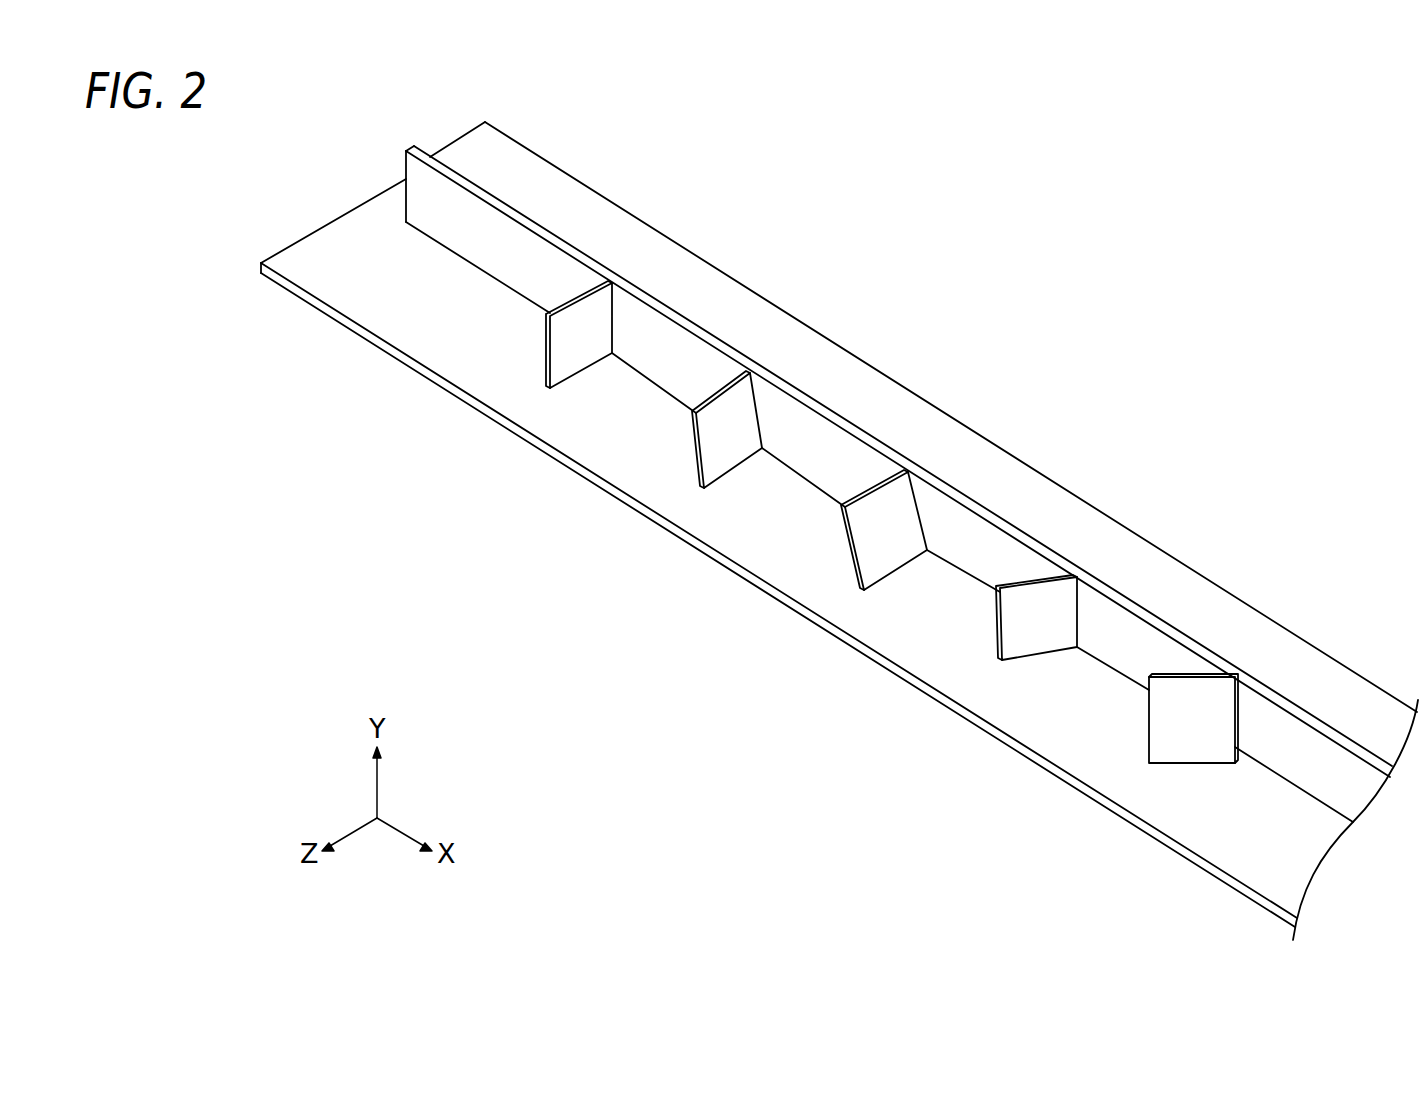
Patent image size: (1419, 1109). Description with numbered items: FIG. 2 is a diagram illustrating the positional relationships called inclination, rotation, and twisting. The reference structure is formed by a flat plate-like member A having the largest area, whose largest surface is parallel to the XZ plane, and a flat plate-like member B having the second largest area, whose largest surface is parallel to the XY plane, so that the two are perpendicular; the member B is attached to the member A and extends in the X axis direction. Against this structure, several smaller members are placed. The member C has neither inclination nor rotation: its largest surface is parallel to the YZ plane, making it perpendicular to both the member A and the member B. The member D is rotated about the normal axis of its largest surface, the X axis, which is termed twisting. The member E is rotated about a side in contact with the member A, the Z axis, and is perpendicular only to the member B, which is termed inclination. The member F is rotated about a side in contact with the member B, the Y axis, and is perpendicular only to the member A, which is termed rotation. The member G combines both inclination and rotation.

The member A is at (675, 260).
The member B is at (427, 197).
The member C is at (566, 365).
The member D is at (718, 455).
The member E is at (880, 558).
The member F is at (1030, 636).
The member G is at (1192, 740).